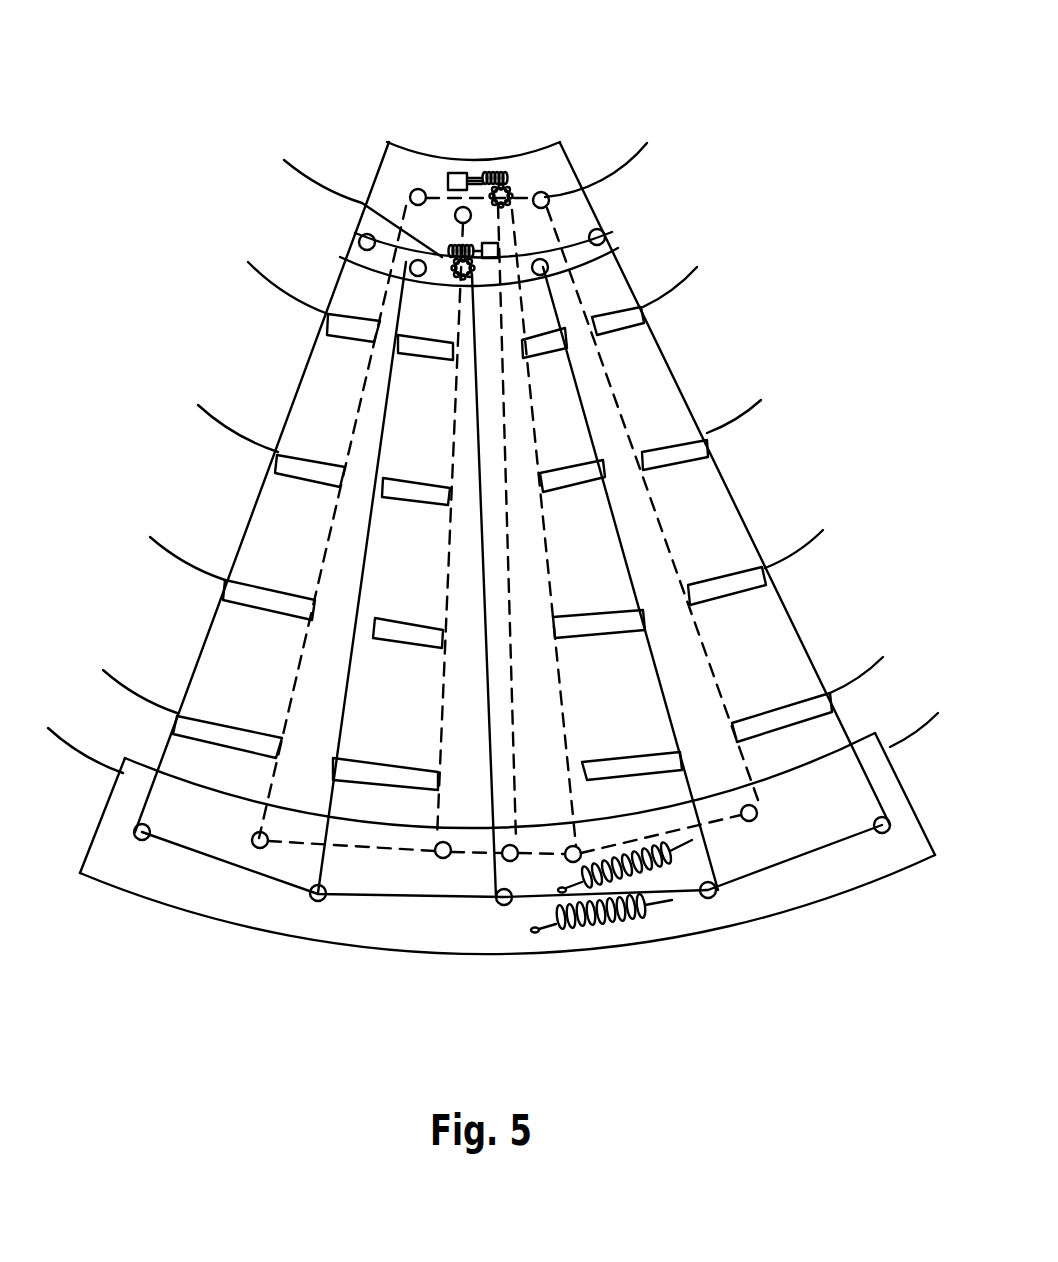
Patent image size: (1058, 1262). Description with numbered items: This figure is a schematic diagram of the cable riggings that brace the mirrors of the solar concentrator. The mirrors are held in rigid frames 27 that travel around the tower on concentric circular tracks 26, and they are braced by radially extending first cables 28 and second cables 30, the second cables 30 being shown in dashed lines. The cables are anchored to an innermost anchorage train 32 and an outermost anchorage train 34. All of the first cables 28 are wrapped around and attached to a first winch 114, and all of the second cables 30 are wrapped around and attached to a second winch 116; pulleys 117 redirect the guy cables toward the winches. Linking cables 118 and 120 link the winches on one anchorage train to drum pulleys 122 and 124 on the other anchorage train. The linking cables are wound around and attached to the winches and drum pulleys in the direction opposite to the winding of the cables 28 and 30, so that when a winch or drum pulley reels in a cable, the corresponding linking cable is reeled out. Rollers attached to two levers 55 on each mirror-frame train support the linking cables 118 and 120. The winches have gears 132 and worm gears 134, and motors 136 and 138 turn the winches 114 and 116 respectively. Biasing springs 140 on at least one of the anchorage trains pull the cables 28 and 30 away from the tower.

The concentric circular tracks 26 is at (670, 287).
The rigid frames 27 is at (700, 459).
The first cables 28 is at (303, 385).
The second cables 30 is at (617, 376).
The innermost anchorage train 32 is at (582, 156).
The outermost anchorage train 34 is at (773, 928).
The lever 55 is at (731, 720).
The first winch 114 is at (440, 257).
The second winch 116 is at (510, 192).
The pulleys 117 is at (416, 189).
The linking cable 118 is at (490, 808).
The linking cable 120 is at (513, 810).
The drum pulley 122 is at (505, 905).
The drum pulley 124 is at (512, 861).
The gears 132 is at (483, 174).
The worm gears 134 is at (492, 171).
The motor 136 is at (486, 262).
The motor 138 is at (455, 172).
The biasing springs 140 is at (603, 920).